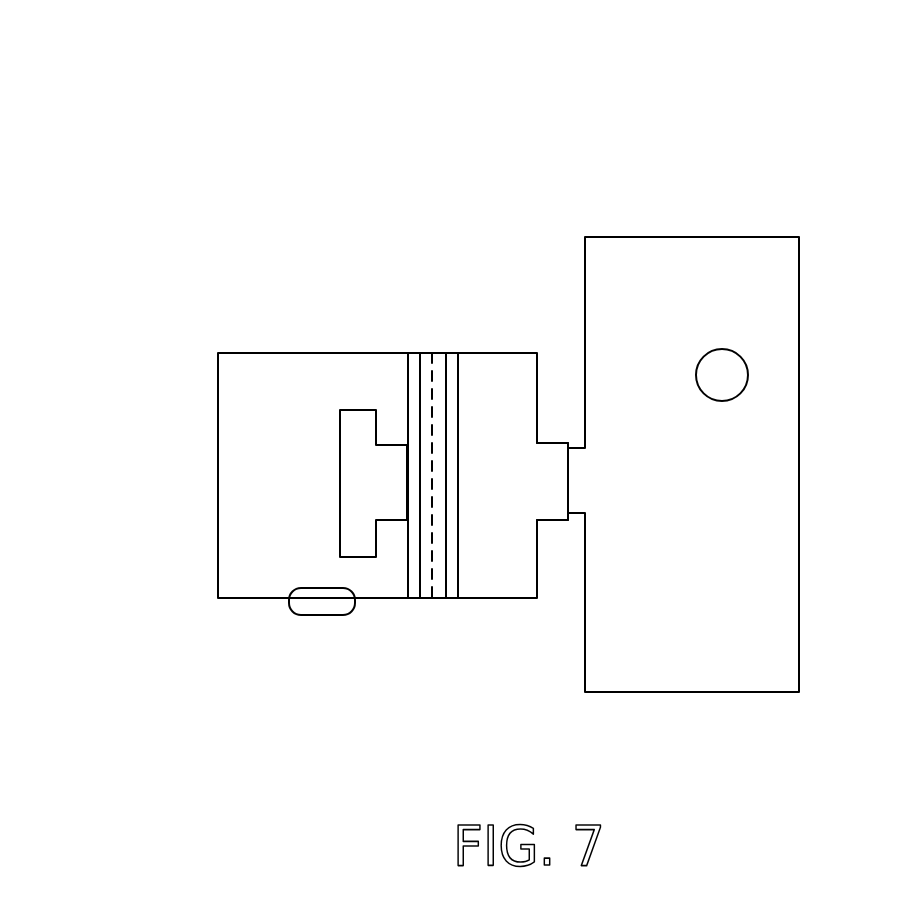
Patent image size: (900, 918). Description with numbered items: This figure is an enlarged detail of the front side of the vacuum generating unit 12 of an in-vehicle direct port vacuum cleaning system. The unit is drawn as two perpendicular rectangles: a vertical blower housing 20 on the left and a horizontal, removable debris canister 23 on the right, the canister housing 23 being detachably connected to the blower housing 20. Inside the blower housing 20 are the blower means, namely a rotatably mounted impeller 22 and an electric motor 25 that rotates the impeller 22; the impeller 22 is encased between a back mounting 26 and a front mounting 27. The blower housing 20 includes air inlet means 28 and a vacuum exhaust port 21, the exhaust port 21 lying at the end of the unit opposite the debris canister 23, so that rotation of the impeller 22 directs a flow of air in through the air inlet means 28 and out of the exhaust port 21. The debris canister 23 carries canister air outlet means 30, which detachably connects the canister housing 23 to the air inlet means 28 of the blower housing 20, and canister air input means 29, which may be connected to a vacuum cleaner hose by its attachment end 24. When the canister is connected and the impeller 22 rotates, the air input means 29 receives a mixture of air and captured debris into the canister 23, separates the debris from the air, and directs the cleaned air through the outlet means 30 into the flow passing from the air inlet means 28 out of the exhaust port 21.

The vacuum generating unit 12 is at (330, 166).
The blower housing 20 is at (192, 467).
The vacuum exhaust port 21 is at (302, 617).
The impeller 22 is at (433, 600).
The debris canister 23 is at (800, 278).
The vacuum cleaner hose attachment end 24 is at (748, 373).
The electric motor 25 is at (350, 410).
The back mounting 26 is at (420, 355).
The front mounting 27 is at (455, 355).
The air inlet means 28 is at (552, 467).
The air input means 29 is at (716, 335).
The canister air outlet means 30 is at (578, 487).